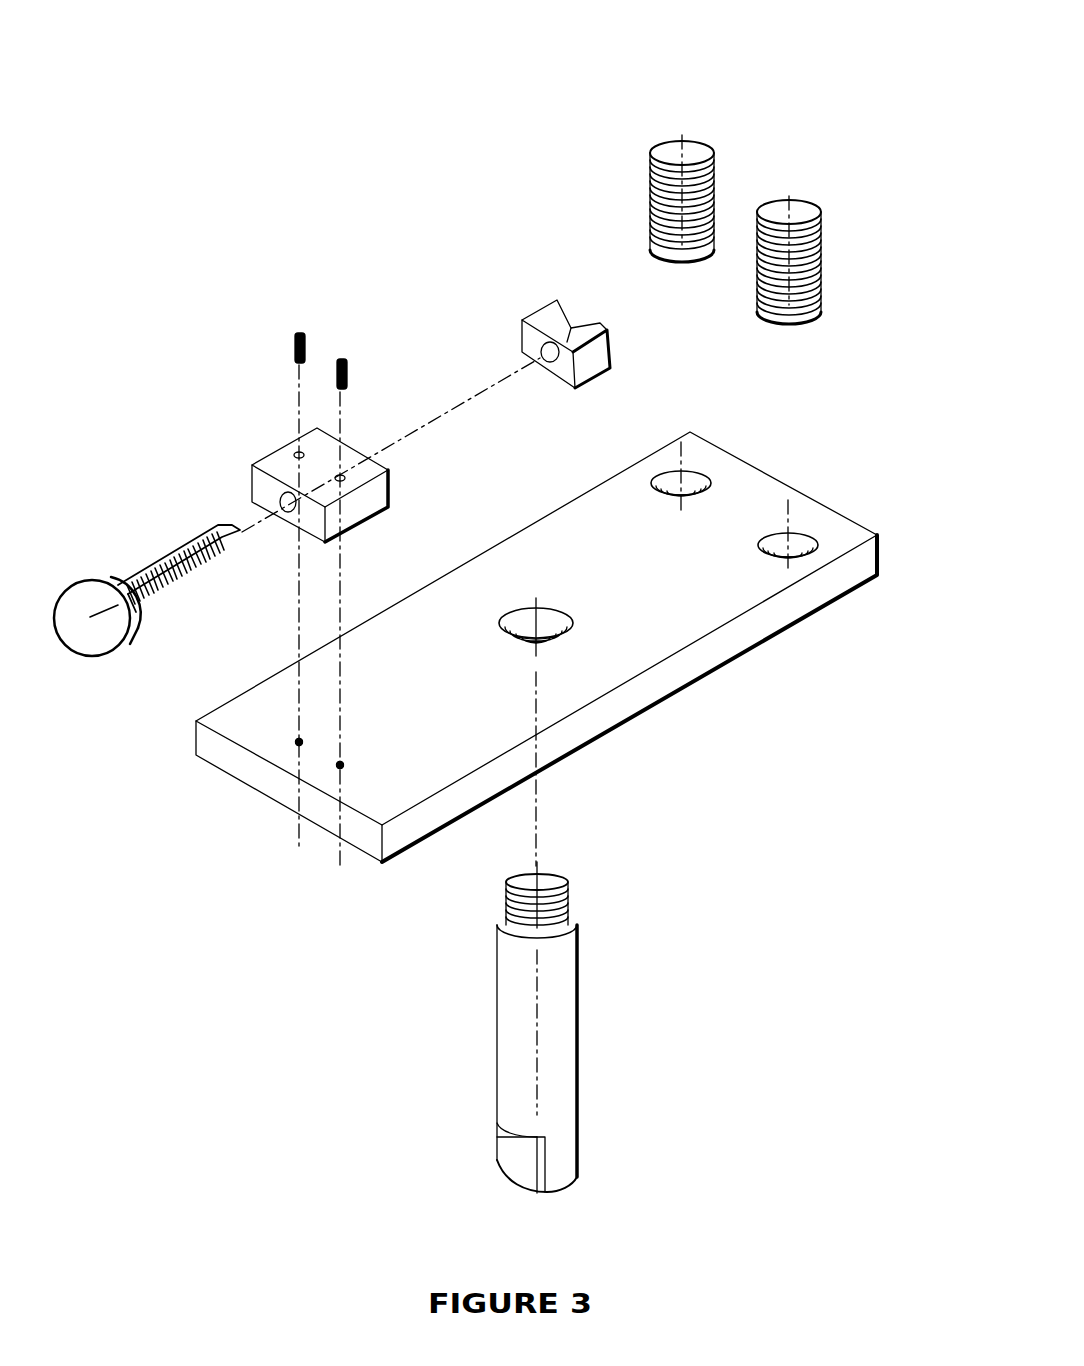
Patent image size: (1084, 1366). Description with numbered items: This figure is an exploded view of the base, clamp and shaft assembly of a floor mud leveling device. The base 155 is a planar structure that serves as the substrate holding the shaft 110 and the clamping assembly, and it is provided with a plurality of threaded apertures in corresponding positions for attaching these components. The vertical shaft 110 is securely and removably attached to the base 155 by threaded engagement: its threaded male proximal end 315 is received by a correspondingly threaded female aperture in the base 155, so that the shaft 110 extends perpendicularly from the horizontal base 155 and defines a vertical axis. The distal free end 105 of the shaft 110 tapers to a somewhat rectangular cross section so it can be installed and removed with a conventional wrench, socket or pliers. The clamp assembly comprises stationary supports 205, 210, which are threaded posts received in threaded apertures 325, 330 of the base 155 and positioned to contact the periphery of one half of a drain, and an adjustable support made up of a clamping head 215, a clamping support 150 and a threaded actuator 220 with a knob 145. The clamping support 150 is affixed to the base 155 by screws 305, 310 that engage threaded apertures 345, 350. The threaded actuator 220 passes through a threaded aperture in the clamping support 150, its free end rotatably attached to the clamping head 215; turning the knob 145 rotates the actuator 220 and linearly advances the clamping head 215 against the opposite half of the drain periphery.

The distal free end 105 is at (552, 1156).
The shaft 110 is at (567, 1022).
The knob 145 is at (92, 643).
The clamping support 150 is at (284, 470).
The base 155 is at (660, 643).
The stationary support 205 is at (684, 152).
The stationary support 210 is at (803, 215).
The clamping head 215 is at (537, 323).
The threaded actuator 220 is at (147, 570).
The screw 305 is at (345, 357).
The screw 310 is at (302, 330).
The threaded male proximal end 315 is at (570, 902).
The threaded aperture 325 is at (683, 482).
The threaded aperture 330 is at (798, 540).
The threaded aperture 345 is at (299, 742).
The threaded aperture 350 is at (340, 765).